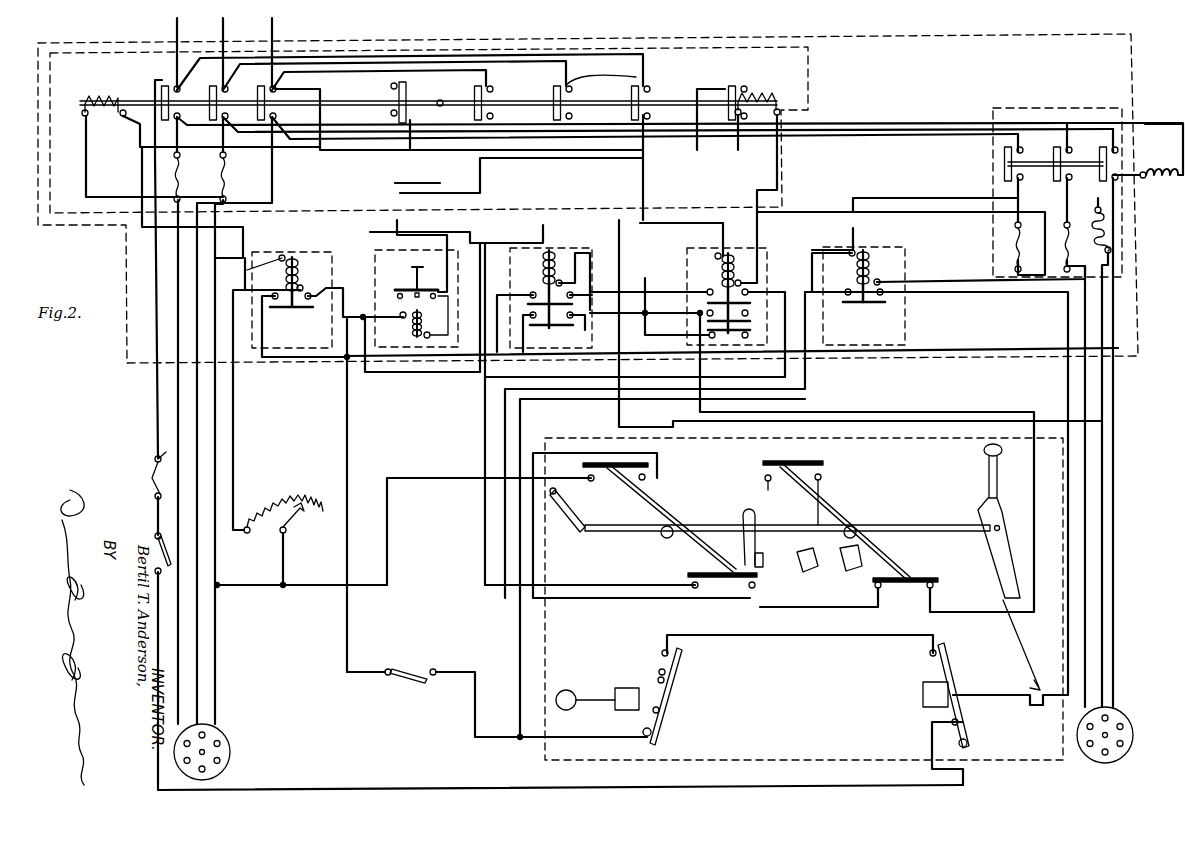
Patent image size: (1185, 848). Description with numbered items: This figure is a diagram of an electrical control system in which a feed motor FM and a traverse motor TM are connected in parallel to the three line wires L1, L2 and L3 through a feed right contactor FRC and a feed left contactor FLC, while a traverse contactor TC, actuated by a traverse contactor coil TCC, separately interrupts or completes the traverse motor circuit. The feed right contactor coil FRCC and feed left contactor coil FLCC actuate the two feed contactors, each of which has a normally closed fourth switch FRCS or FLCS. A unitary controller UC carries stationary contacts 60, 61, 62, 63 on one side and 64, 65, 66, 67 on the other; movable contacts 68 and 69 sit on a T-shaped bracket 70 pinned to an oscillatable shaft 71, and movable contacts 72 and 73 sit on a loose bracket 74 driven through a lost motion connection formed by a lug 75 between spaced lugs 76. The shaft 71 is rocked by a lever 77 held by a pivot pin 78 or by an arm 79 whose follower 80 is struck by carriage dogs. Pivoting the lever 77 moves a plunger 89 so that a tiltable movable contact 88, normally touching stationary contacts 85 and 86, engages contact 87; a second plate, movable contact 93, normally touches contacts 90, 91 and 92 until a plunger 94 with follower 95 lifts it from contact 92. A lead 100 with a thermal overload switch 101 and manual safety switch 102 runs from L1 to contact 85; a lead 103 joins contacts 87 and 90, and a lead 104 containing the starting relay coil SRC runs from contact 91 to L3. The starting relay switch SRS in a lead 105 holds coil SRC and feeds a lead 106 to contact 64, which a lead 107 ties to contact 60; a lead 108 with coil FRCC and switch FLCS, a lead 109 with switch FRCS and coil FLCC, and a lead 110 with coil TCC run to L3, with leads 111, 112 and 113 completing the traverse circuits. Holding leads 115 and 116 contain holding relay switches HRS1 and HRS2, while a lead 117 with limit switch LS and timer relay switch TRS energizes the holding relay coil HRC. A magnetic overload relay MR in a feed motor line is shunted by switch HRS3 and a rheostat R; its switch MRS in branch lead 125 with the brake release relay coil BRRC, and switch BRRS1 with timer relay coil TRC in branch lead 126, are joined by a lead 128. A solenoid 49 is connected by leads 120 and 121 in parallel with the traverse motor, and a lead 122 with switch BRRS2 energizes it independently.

The line wire L1 is at (176, 27).
The line wire L2 is at (222, 27).
The line wire L3 is at (271, 27).
The feed right contactor FRC is at (222, 76).
The feed right contactor coil FRCC is at (115, 82).
The feed right contactor switch FRCS is at (408, 92).
The feed left contactor FLC is at (566, 76).
The feed left contactor switch FLCS is at (727, 85).
The feed left contactor coil FLCC is at (744, 90).
The magnetic overload relay MR is at (316, 258).
The magnetic relay switch MRS is at (371, 480).
The timer relay switch TRS is at (390, 278).
The timer relay coil TRC is at (413, 319).
The brake release relay coil BRRC is at (545, 276).
The brake release relay switch BRRS1 is at (550, 292).
The brake release relay switch BRRS2 is at (553, 332).
The holding relay coil HRC is at (757, 250).
The holding relay switch HRS1 is at (760, 303).
The holding relay switch HRS2 is at (760, 319).
The holding relay switch HRS3 is at (760, 331).
The starting relay coil SRC is at (884, 248).
The starting relay switch SRS is at (878, 304).
The traverse contactor TC is at (1055, 182).
The traverse contactor coil TCC is at (1115, 229).
The unitary controller UC is at (651, 652).
The limit switch LS is at (397, 684).
The feed motor FM is at (233, 764).
The traverse motor TM is at (1094, 762).
The rheostat R is at (403, 439).
The solenoid 49 is at (1168, 175).
The stationary contact 60 is at (766, 478).
The stationary contact 61 is at (822, 479).
The stationary contact 62 is at (589, 478).
The stationary contact 63 is at (644, 477).
The stationary contact 64 is at (877, 588).
The stationary contact 65 is at (931, 588).
The stationary contact 66 is at (693, 586).
The stationary contact 67 is at (754, 588).
The movable contact 68 is at (620, 444).
The movable contact 69 is at (744, 566).
The T-shaped bracket 70 is at (665, 498).
The oscillatable shaft 71 is at (622, 531).
The movable contact 72 is at (810, 461).
The movable contact 73 is at (916, 577).
The T-shaped bracket 74 is at (834, 498).
The lug 75 is at (763, 568).
The spaced lugs 76 is at (815, 562).
The lever 77 is at (990, 472).
The pivot pin 78 is at (996, 514).
The arm 79 is at (573, 514).
The follower 80 is at (554, 498).
The stationary contact 85 is at (968, 736).
The stationary contact 86 is at (968, 716).
The stationary contact 87 is at (928, 655).
The movable contact 88 is at (944, 670).
The plunger 89 is at (988, 692).
The stationary contact 90 is at (672, 668).
The stationary contact 91 is at (670, 690).
The stationary contact 92 is at (651, 734).
The movable contact 93 is at (660, 718).
The plunger 94 is at (604, 704).
The follower 95 is at (567, 706).
The lead 100 is at (158, 400).
The thermal overload switch 101 is at (156, 464).
The manual switch 102 is at (155, 536).
The lead 103 is at (756, 636).
The lead 104 is at (924, 244).
The lead 105 is at (988, 292).
The lead 106 is at (784, 632).
The lead 107 is at (817, 600).
The lead 108 is at (696, 118).
The lead 109 is at (398, 184).
The lead 110 is at (899, 200).
The lead 111 is at (244, 242).
The lead 112 is at (554, 454).
The lead 113 is at (478, 182).
The lead 115 is at (660, 291).
The lead 116 is at (692, 296).
The lead 117 is at (373, 264).
The lead 120 is at (1144, 172).
The lead 121 is at (1157, 126).
The lead 122 is at (610, 322).
The branch lead 125 is at (322, 246).
The branch lead 126 is at (442, 260).
The lead 128 is at (370, 262).